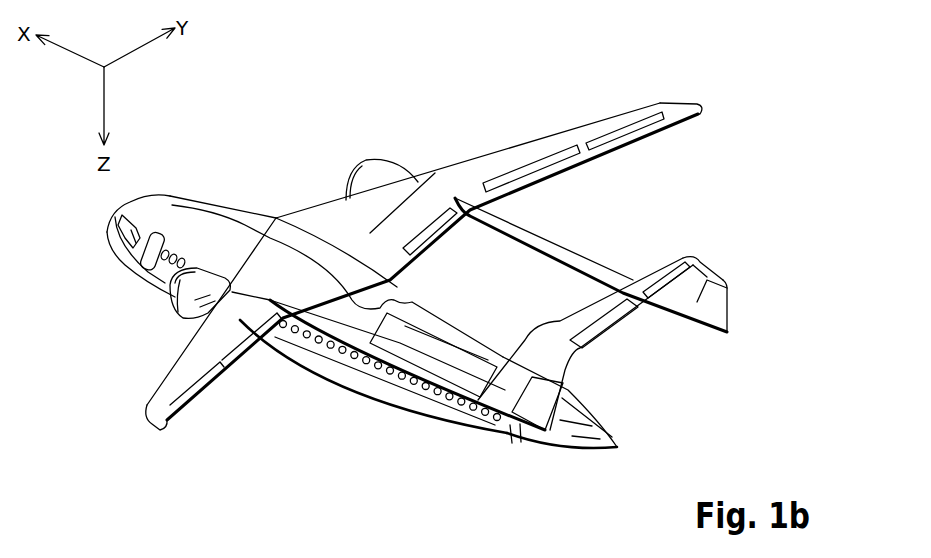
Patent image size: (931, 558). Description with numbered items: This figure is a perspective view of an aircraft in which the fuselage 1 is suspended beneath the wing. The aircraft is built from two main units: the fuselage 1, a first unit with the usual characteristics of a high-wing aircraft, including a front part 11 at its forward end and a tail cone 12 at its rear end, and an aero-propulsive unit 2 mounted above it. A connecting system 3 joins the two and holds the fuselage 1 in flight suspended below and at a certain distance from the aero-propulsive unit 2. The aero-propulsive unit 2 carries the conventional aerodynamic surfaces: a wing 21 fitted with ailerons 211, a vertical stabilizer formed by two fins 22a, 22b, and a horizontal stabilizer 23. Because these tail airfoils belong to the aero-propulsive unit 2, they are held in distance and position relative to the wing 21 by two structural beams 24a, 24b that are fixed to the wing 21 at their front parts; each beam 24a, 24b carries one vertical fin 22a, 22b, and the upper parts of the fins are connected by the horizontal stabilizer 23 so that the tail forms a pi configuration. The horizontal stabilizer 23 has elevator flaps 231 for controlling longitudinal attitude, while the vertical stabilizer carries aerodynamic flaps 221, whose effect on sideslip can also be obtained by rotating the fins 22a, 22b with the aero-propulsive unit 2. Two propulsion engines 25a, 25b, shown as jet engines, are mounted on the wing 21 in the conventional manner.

The fuselage 1 is at (305, 342).
The aero-propulsive unit 2 is at (302, 195).
The connecting system 3 is at (366, 326).
The front part 11 is at (137, 257).
The tail cone 12 is at (560, 440).
The wing 21 is at (508, 163).
The ailerons 211 is at (637, 138).
The vertical fin 22a is at (682, 320).
The vertical fin 22b is at (512, 382).
The aerodynamic flaps of the vertical stabilizer 221 is at (720, 303).
The horizontal stabilizer 23 is at (645, 276).
The aerodynamic flaps of the elevator 231 is at (675, 288).
The structural beam 24a is at (600, 272).
The structural beam 24b is at (442, 387).
The propulsion engine 25a is at (377, 167).
The propulsion engine 25b is at (180, 308).